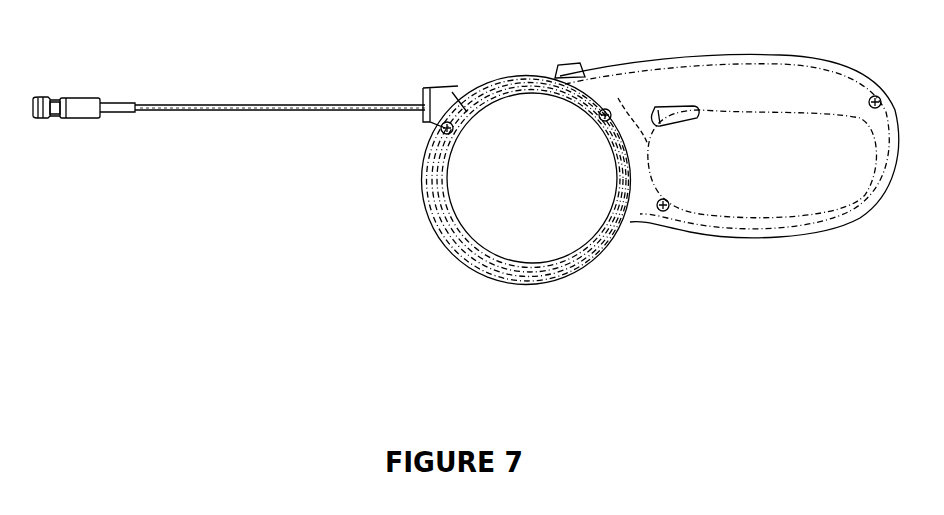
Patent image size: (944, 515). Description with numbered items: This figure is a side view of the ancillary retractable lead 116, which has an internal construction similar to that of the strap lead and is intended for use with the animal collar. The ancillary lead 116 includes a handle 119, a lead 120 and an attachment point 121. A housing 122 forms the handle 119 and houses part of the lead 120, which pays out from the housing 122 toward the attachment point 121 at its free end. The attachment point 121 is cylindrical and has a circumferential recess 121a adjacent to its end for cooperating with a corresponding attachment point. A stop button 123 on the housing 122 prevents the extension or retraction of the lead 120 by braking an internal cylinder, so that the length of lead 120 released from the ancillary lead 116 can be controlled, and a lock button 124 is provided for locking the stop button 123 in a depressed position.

The ancillary retractable lead 116 is at (318, 204).
The handle 119 is at (816, 154).
The lead 120 is at (200, 102).
The attachment point 121 is at (56, 116).
The clip attachment gap 121a is at (53, 97).
The housing 122 is at (635, 200).
The stop button 123 is at (666, 110).
The lock button 124 is at (560, 70).